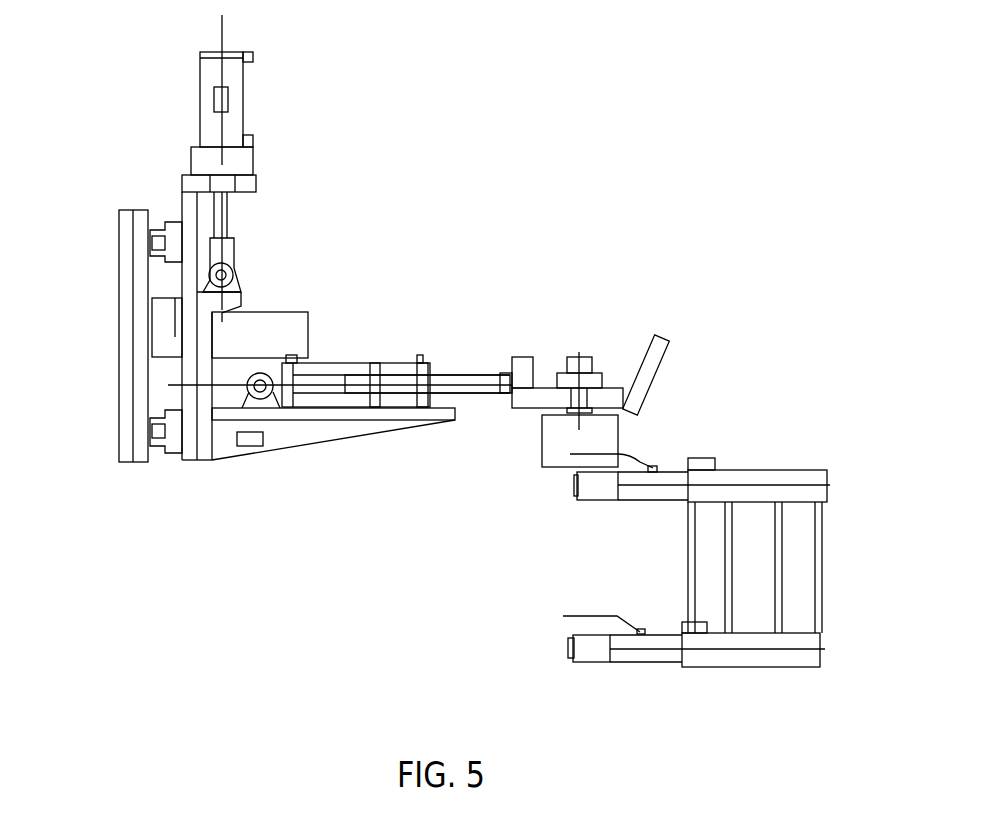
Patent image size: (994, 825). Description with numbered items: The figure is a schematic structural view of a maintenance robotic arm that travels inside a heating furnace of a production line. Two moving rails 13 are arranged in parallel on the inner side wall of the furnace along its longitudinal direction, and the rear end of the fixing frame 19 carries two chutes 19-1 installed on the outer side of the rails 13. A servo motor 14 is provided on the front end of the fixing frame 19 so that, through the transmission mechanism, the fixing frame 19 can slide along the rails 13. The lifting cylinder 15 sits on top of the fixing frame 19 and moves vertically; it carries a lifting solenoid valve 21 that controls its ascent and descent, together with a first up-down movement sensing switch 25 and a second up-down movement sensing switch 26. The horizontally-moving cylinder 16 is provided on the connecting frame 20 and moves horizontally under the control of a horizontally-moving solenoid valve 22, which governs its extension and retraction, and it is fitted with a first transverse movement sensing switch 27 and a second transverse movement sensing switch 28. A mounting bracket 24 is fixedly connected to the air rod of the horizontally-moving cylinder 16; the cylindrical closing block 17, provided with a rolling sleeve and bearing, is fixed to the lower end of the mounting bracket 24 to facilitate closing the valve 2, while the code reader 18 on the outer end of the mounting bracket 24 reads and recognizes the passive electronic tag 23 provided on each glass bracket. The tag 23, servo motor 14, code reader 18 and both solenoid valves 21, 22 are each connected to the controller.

The valve 2 is at (637, 458).
The moving rails 13 is at (158, 240).
The servo motor 14 is at (255, 340).
The lifting cylinder 15 is at (207, 117).
The horizontally-moving cylinder 16 is at (335, 395).
The closing block 17 is at (562, 437).
The code reader 18 is at (641, 362).
The fixing frame 19 is at (193, 195).
The chutes 19-1 is at (172, 432).
The connecting frame 20 is at (208, 303).
The lifting solenoid valve 21 is at (213, 97).
The horizontally-moving solenoid valve 22 is at (256, 440).
The passive electronic tag 23 is at (704, 464).
The mounting bracket 24 is at (527, 397).
The first up-down movement sensing switch 25 is at (200, 57).
The second up-down movement sensing switch 26 is at (247, 138).
The first transverse movement sensing switch 27 is at (292, 363).
The second transverse movement sensing switch 28 is at (421, 366).